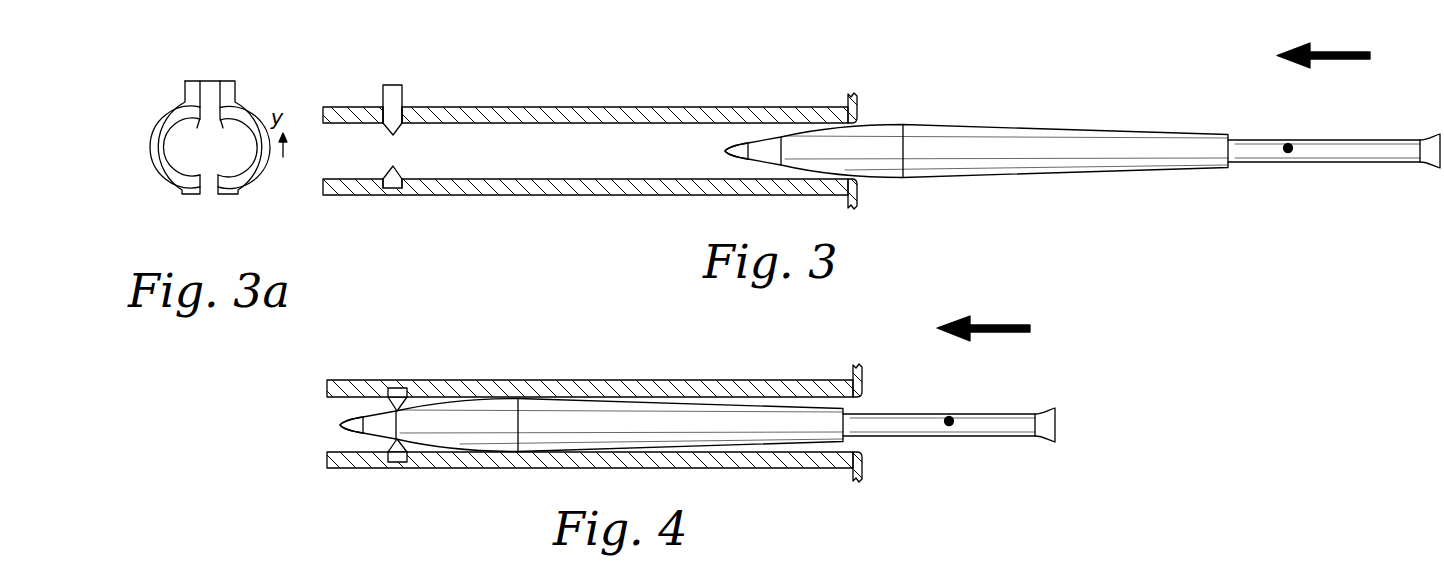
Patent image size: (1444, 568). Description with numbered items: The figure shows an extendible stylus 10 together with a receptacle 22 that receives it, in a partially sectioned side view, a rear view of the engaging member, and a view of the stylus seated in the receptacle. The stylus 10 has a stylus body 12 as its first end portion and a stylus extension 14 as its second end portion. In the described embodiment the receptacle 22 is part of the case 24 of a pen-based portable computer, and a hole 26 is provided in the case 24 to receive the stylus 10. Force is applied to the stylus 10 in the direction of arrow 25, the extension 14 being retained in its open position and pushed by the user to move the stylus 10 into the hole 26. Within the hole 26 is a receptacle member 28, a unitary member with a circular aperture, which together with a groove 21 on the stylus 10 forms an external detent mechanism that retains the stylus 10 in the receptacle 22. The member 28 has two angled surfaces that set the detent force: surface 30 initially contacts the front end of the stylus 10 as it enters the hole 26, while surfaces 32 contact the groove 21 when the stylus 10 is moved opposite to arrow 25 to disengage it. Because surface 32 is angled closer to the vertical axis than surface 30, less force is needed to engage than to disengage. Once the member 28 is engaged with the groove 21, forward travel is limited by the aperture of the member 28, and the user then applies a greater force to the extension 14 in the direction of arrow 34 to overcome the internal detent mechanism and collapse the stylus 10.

In FIG. 3, the extendible stylus 10 is at (876, 128).
In FIG. 3, the stylus body 12 is at (976, 122).
In FIG. 4, the stylus body 12 is at (563, 390).
In FIG. 3, the stylus extension 14 is at (1350, 159).
In FIG. 4, the stylus extension 14 is at (1002, 428).
In FIG. 3, the groove 21 is at (764, 112).
In FIG. 4, the groove 21 is at (340, 417).
In FIG. 3, the receptacle 22 is at (584, 128).
In FIG. 4, the receptacle 22 is at (594, 419).
In FIG. 3, the case 24 is at (633, 107).
In FIG. 3, the arrow 25 is at (1288, 148).
In FIG. 3, the hole 26 is at (555, 160).
In FIG. 3A, the receptacle member 28 is at (191, 163).
In FIG. 3, the receptacle member 28 is at (410, 150).
In FIG. 4, the receptacle member 28 is at (397, 392).
In FIG. 3A, the surface 30 is at (190, 171).
In FIG. 3, the surface 30 is at (405, 126).
In FIG. 3, the surface 32 is at (385, 128).
In FIG. 4, the arrow 34 is at (949, 421).